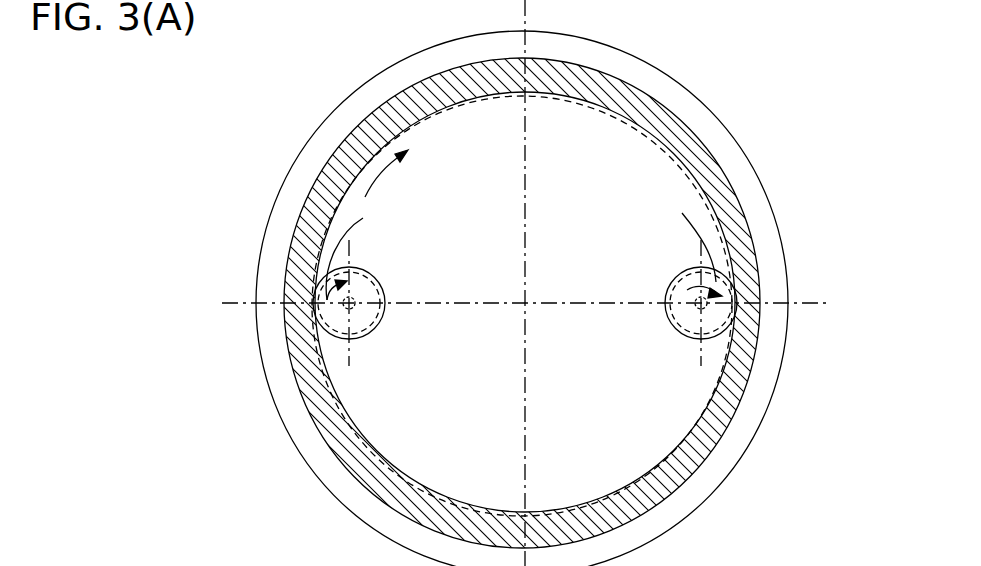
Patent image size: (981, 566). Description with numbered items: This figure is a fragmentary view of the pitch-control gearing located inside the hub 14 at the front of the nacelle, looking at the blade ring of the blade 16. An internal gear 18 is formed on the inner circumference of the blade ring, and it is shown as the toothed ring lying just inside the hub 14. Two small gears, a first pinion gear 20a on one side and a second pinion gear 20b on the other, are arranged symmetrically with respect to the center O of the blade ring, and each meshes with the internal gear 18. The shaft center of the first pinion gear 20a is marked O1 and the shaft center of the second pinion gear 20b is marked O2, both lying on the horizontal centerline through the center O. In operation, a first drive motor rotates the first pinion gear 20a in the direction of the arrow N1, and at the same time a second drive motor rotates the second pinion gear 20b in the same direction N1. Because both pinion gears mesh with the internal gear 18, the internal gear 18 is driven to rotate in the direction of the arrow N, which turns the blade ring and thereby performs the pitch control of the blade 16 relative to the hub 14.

The hub 14 is at (757, 208).
The blade 16 is at (690, 140).
The internal gear 18 is at (478, 97).
The first pinion gear 20a is at (363, 283).
The second pinion gear 20b is at (686, 290).
The rotation direction of internal gear N is at (397, 167).
The rotation direction of pinion gears N1 is at (524, 248).
The center of blade ring O is at (517, 312).
The shaft center of first pinion gear O1 is at (352, 306).
The shaft center of second pinion gear O2 is at (697, 310).